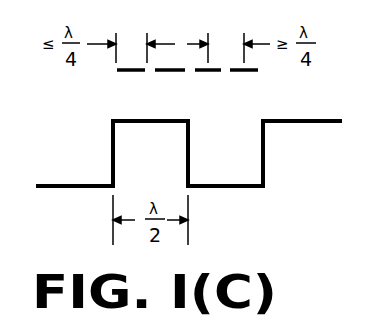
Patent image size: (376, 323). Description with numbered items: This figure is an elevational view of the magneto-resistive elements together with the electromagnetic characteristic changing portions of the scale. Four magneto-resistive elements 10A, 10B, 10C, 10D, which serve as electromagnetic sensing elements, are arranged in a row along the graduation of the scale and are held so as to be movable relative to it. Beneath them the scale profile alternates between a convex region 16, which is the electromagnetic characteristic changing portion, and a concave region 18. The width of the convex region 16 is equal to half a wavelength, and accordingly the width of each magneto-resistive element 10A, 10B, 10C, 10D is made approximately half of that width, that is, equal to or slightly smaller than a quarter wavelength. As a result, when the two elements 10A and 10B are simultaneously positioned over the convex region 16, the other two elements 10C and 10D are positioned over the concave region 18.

The magneto-resistive element 10A is at (125, 72).
The magneto-resistive element 10B is at (173, 72).
The magneto-resistive element 10C is at (208, 72).
The magneto-resistive element 10D is at (250, 72).
The convex region 16 is at (145, 123).
The concave region 18 is at (72, 183).